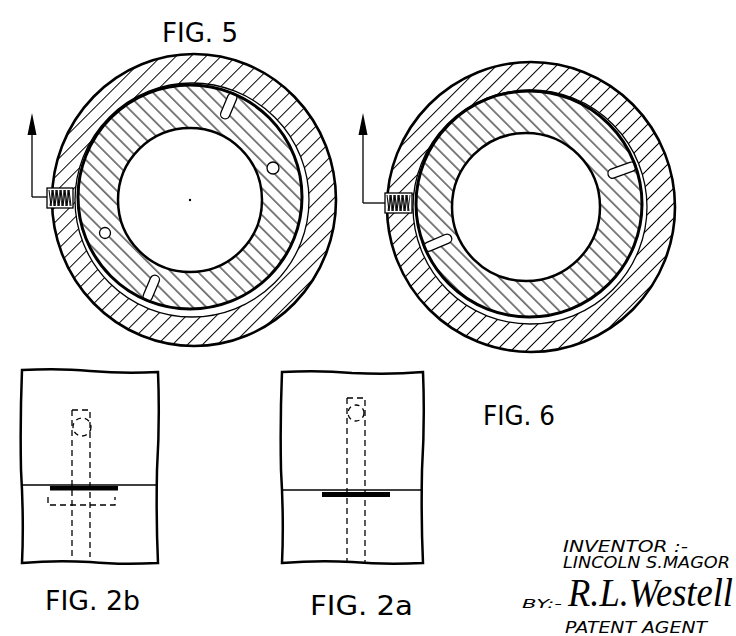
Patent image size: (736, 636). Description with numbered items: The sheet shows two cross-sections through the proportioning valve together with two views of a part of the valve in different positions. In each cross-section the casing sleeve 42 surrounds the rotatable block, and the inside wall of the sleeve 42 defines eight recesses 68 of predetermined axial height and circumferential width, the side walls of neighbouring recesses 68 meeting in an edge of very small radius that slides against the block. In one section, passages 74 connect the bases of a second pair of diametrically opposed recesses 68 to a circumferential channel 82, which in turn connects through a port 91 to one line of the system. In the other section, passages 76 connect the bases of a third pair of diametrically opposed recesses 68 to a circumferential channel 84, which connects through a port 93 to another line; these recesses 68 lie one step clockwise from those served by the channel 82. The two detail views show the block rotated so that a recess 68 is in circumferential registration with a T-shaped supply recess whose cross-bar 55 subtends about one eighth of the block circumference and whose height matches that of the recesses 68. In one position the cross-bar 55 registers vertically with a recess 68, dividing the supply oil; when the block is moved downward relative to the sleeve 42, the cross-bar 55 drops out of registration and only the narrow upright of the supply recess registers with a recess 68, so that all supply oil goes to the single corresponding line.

In FIG. 2b, the sleeve 42 is at (145, 468).
In FIG. 2b, the cross-bar 55 is at (113, 506).
In FIG. 2a, the cross-bar 55 is at (381, 490).
In FIG. 2b, the recess 68 is at (61, 486).
In FIG. 2a, the recess 68 is at (386, 497).
In FIG. 5, the passage 74 is at (147, 301).
In FIG. 5, the passage 76 is at (100, 237).
In FIG. 6, the passage 76 is at (427, 251).
In FIG. 5, the circumferential channel 82 is at (272, 278).
In FIG. 6, the circumferential channel 84 is at (638, 252).
In FIG. 5, the port 91 is at (52, 212).
In FIG. 6, the port 93 is at (388, 215).